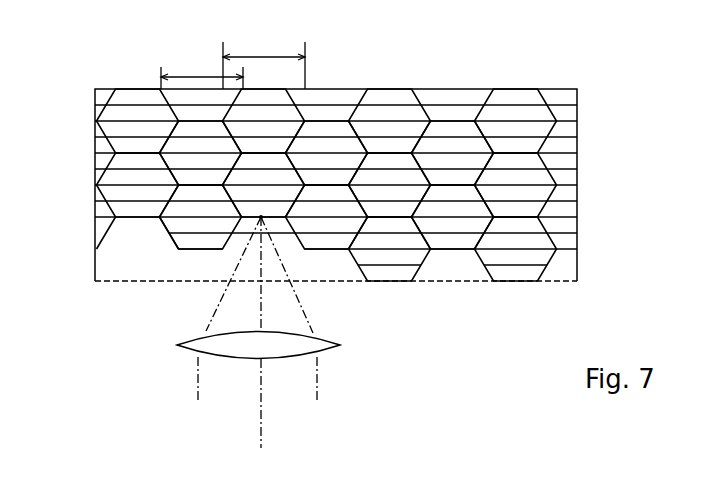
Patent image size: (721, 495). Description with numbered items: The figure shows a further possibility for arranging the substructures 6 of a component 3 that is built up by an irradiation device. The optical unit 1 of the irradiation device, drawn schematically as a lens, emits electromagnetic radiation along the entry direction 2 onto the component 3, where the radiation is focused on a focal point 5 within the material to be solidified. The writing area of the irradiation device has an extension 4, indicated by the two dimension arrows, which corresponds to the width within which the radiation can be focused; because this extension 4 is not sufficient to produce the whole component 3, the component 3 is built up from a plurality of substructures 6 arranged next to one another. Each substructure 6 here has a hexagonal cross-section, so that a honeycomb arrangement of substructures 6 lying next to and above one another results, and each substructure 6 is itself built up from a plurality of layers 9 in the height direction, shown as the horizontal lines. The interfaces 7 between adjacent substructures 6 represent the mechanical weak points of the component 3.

The optical unit 1 is at (170, 351).
The entry direction 2 is at (261, 432).
The component 3 is at (82, 62).
The extension of the writing area 4 is at (233, 58).
The focal point 5 is at (259, 219).
The substructure 6 is at (434, 163).
The interface 7 is at (160, 148).
The layer 9 is at (562, 180).